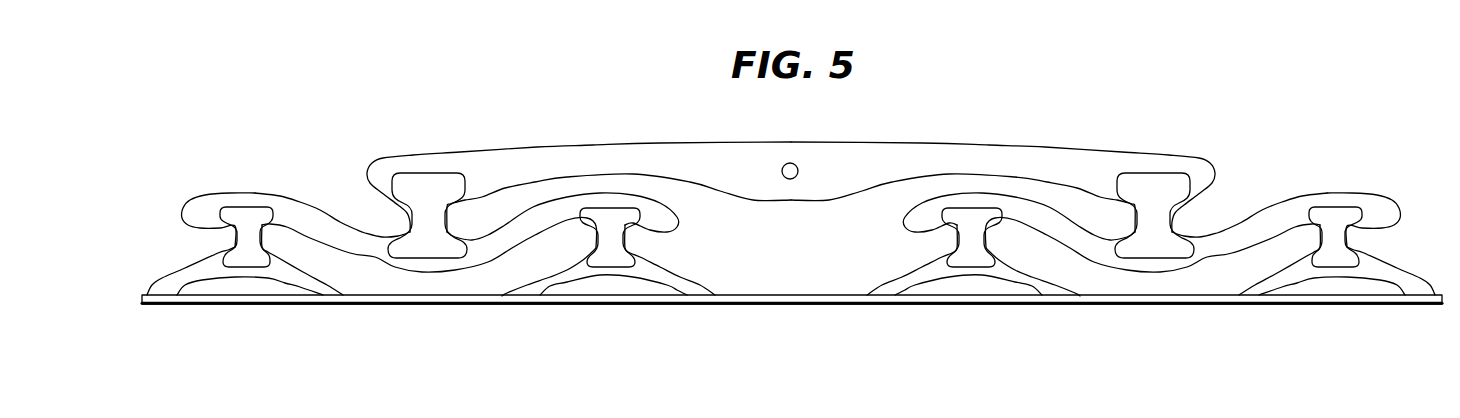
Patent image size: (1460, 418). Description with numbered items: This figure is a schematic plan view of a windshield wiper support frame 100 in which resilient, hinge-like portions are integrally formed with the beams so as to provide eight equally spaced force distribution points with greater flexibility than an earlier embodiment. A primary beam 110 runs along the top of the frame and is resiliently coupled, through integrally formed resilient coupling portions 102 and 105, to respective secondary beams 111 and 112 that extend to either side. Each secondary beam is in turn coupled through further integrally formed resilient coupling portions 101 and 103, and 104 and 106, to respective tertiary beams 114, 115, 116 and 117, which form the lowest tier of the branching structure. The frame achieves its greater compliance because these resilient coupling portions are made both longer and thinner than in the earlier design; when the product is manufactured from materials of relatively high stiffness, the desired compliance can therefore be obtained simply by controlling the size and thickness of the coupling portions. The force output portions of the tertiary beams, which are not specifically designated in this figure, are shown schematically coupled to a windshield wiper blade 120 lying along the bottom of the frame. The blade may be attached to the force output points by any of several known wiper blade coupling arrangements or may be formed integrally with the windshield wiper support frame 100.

The windshield wiper support frame 100 is at (809, 360).
The resilient coupling portion 101 is at (246, 210).
The resilient coupling portion 102 is at (418, 180).
The resilient coupling portion 103 is at (610, 230).
The resilient coupling portion 104 is at (970, 232).
The resilient coupling portion 105 is at (1156, 178).
The resilient coupling portion 106 is at (1344, 210).
The primary beam 110 is at (533, 162).
The secondary beam 111 is at (313, 210).
The secondary beam 112 is at (1245, 220).
The tertiary beam 114 is at (168, 290).
The tertiary beam 115 is at (540, 287).
The tertiary beam 116 is at (898, 288).
The tertiary beam 117 is at (1265, 285).
The windshield wiper blade 120 is at (1137, 303).